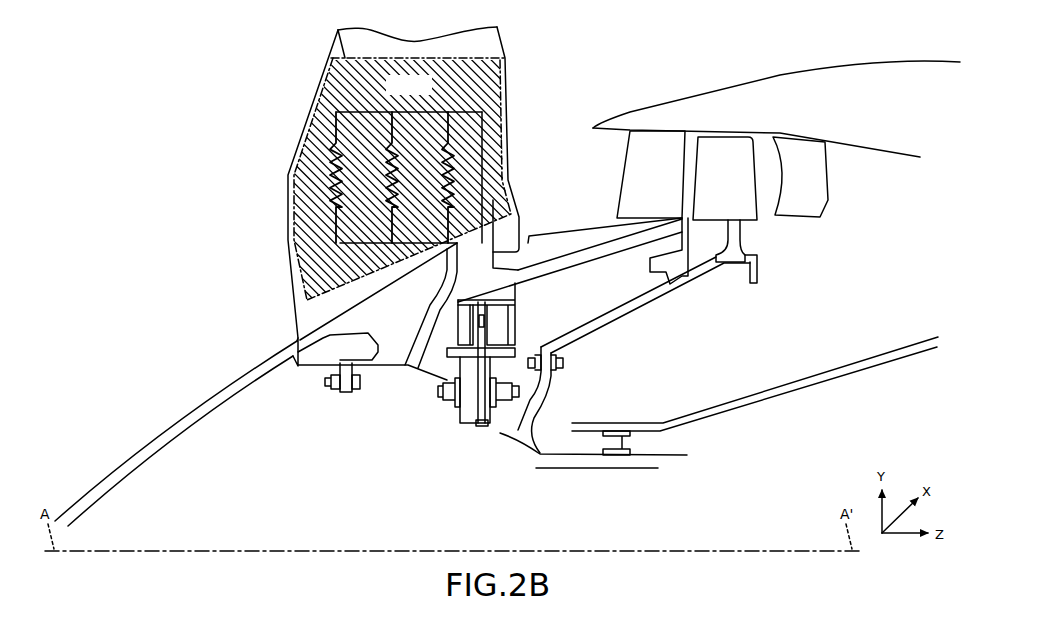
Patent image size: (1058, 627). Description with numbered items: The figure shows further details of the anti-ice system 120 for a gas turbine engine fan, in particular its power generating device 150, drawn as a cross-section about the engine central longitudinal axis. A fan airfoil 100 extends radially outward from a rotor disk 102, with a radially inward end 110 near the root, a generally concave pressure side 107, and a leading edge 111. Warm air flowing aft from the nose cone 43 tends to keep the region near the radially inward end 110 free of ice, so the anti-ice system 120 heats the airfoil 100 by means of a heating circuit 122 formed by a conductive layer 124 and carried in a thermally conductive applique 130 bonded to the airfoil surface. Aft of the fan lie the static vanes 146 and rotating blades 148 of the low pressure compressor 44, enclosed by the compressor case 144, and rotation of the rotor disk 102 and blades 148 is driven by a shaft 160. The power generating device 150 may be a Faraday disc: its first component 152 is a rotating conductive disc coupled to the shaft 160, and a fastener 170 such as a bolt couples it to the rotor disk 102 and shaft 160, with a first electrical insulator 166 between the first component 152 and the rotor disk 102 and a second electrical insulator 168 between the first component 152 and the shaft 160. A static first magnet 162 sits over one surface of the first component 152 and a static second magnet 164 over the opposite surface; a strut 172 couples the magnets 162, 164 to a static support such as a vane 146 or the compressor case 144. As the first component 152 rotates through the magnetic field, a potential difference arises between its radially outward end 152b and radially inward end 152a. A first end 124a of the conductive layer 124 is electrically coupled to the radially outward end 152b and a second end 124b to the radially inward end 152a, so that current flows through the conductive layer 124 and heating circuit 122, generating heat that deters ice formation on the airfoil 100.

The nose cone 43 is at (112, 480).
The low pressure compressor 44 is at (668, 96).
The airfoil 100 is at (364, 44).
The rotor disk 102 is at (297, 366).
The pressure side 107 is at (343, 48).
The radially inward end 110 is at (320, 311).
The leading edge 111 is at (288, 241).
The anti-ice system 120 is at (247, 152).
The heating circuit 122 is at (325, 183).
The conductive layer 124 is at (484, 165).
The first end 124a is at (528, 272).
The second end 124b is at (430, 377).
The thermally conductive applique 130 is at (390, 165).
The compressor case 144 is at (768, 93).
The static vane 146 is at (722, 174).
The rotating blade 148 is at (725, 178).
The power generating device 150 is at (442, 410).
The first component 152 is at (482, 352).
The radially inward end 152a is at (495, 420).
The radially outward end 152b is at (483, 320).
The shaft 160 is at (537, 458).
The first magnet 162 is at (460, 310).
The second magnet 164 is at (512, 302).
The first electrical insulator 166 is at (462, 420).
The second electrical insulator 168 is at (485, 426).
The fastener 170 is at (510, 395).
The strut 172 is at (587, 247).